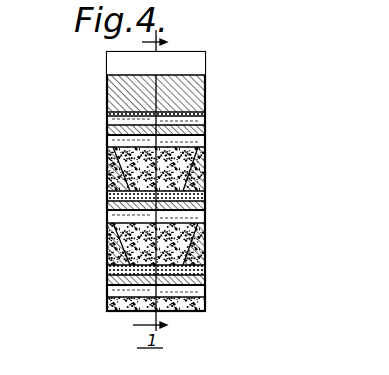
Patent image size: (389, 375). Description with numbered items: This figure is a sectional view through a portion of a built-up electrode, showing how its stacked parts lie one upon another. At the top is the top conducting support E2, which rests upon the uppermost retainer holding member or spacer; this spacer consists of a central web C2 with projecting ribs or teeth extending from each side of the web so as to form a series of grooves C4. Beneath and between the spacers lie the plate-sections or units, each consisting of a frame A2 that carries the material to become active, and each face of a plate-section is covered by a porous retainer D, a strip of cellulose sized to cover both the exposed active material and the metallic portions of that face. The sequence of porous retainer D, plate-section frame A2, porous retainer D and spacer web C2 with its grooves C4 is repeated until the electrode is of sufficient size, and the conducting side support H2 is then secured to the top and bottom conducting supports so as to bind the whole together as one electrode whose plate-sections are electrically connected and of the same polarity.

The conducting side support H2 is at (205, 53).
The top conducting support E2 is at (206, 90).
The porous retainer D is at (205, 146).
The frame A2 is at (205, 166).
The central web C2 is at (228, 283).
The grooves C4 is at (107, 217).